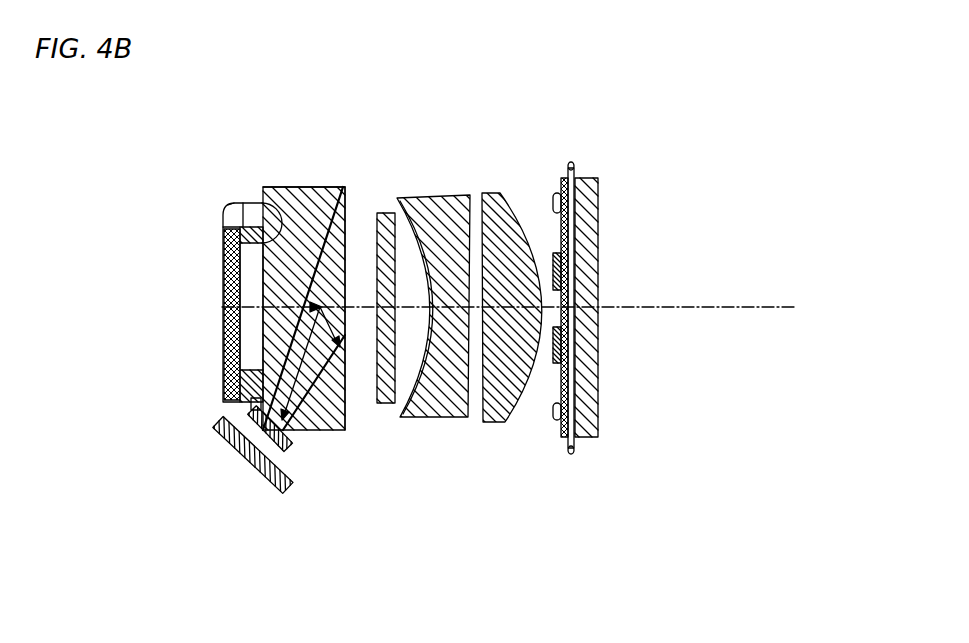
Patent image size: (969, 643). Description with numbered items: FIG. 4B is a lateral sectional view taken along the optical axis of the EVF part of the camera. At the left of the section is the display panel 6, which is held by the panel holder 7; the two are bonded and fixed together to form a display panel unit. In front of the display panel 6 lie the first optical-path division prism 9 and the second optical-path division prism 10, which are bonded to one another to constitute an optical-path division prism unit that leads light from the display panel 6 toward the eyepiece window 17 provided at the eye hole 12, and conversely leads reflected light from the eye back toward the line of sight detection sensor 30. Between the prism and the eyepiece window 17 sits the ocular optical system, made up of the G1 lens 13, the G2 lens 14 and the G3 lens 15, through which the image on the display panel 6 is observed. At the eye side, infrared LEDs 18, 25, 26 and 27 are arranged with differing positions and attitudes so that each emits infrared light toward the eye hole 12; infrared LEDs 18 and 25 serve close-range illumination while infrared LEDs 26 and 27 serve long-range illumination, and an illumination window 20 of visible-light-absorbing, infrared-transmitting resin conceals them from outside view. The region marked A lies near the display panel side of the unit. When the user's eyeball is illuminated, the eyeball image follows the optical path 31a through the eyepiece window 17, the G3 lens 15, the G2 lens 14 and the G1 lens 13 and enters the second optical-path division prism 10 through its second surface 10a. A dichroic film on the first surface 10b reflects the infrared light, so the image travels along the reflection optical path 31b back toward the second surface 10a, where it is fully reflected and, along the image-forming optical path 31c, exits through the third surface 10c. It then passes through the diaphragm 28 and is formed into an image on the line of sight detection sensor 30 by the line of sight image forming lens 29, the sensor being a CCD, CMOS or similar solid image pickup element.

The display panel 6 is at (223, 257).
The panel holder 7 is at (237, 207).
The first optical-path division prism 9 is at (285, 187).
The second optical-path division prism 10 is at (332, 432).
The second surface 10a is at (347, 328).
The first surface 10b is at (320, 189).
The third surface 10c is at (272, 378).
The eye hole 12 is at (250, 207).
The G1 lens 13 is at (383, 212).
The G2 lens 14 is at (447, 196).
The G3 lens 15 is at (523, 193).
The eyepiece window 17 is at (595, 387).
The infrared LED 18 is at (588, 268).
The illumination window 20 is at (592, 225).
The infrared LED 25 is at (590, 340).
The infrared LED 26 is at (553, 427).
The infrared LED 27 is at (562, 164).
The diaphragm 28 is at (290, 438).
The line of sight image forming lens 29 is at (255, 413).
The line of sight detection sensor 30 is at (253, 473).
The optical path 31a is at (705, 307).
The reflection optical path 31b is at (223, 315).
The image-forming optical path 31c is at (345, 383).
The region A is at (230, 204).